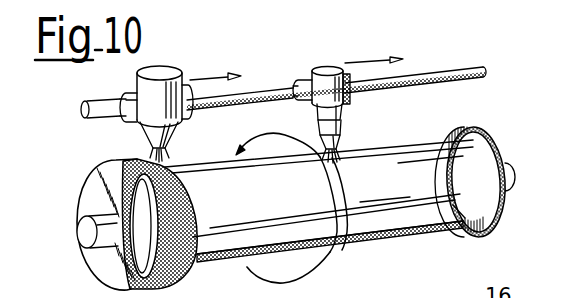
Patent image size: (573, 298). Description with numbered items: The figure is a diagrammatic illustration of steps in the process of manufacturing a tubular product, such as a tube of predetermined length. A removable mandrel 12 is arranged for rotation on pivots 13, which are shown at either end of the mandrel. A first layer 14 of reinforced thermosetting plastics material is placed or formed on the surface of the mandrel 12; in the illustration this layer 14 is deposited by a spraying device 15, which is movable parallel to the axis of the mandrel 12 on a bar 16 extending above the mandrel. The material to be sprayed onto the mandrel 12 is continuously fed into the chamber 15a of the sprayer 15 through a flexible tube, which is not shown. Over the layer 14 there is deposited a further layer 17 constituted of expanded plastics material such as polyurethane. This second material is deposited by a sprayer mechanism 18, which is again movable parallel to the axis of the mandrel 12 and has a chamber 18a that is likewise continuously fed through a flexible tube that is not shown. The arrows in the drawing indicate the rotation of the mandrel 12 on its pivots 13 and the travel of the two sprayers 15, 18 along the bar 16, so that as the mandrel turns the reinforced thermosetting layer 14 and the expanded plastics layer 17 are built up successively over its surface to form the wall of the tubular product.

The removable mandrel 12 is at (476, 237).
The pivots 13 is at (83, 222).
The first layer 14 is at (162, 250).
The spraying device 15 is at (338, 113).
The chamber 15a is at (326, 73).
The bar 16 is at (447, 81).
The further layer 17 is at (197, 250).
The sprayer mechanism 18 is at (148, 147).
The chamber 18a is at (162, 72).